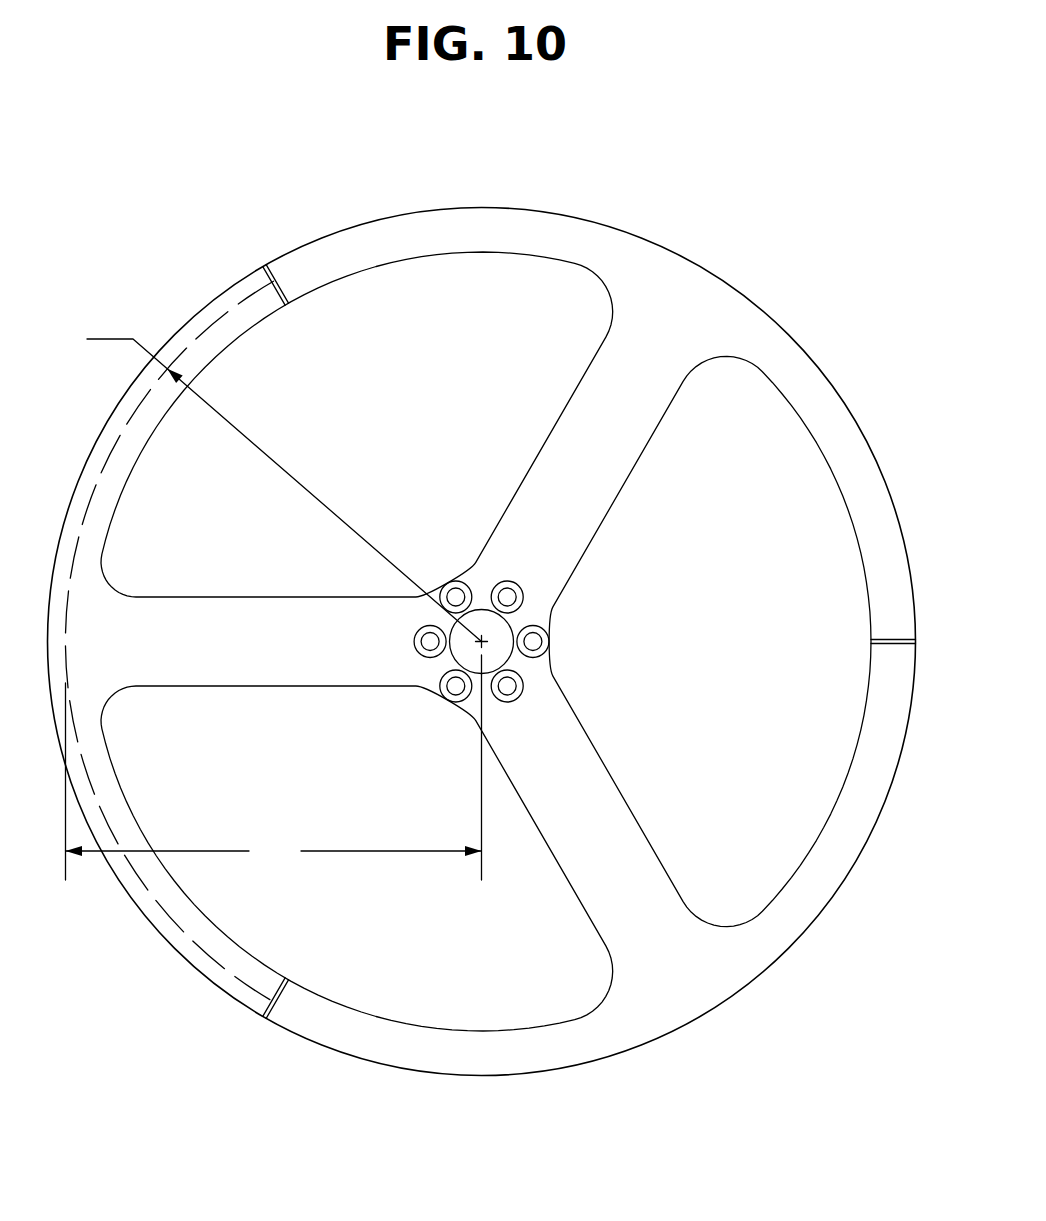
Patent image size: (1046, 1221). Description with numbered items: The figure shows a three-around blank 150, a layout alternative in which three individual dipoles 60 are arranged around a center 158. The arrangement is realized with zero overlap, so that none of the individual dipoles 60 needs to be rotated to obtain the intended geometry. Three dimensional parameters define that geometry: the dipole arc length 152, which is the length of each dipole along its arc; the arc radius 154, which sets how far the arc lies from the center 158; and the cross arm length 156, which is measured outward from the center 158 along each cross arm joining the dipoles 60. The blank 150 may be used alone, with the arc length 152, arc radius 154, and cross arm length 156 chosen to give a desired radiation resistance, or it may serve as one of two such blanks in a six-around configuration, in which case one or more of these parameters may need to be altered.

The three-around blank 150 is at (312, 133).
The dipole arc length 152 is at (125, 441).
The arc radius 154 is at (261, 483).
The cross arm length 156 is at (274, 767).
The center 158 is at (513, 622).
The dipole 60 is at (128, 803).